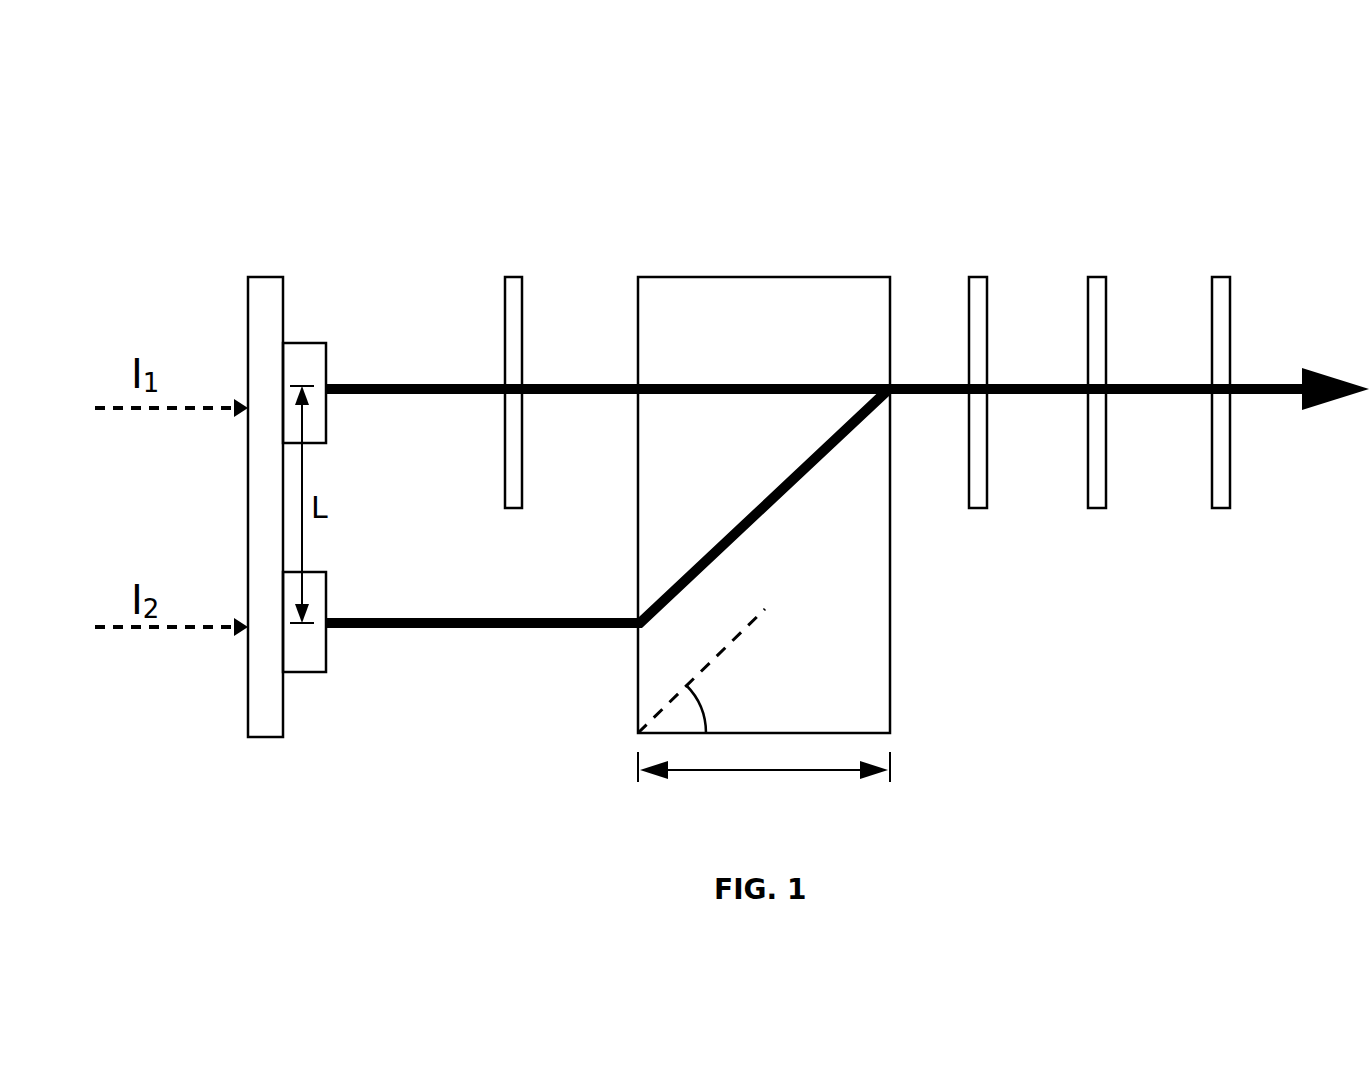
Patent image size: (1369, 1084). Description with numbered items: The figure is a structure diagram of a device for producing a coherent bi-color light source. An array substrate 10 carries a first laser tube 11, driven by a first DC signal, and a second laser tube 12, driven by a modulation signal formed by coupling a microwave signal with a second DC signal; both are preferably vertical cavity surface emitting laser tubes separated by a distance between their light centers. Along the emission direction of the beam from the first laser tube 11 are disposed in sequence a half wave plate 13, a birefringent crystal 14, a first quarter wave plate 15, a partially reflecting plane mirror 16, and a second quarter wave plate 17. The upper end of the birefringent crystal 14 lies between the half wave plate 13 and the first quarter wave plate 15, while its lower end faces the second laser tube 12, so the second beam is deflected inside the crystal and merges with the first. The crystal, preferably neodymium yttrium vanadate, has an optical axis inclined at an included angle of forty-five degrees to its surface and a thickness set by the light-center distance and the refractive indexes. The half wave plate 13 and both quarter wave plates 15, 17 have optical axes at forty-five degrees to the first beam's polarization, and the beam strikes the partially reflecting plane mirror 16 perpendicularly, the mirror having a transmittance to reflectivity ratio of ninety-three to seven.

The array substrate 10 is at (257, 290).
The first laser tube 11 is at (312, 357).
The second laser tube 12 is at (305, 655).
The half wave plate 13 is at (512, 283).
The birefringent crystal 14 is at (763, 290).
The first quarter wave plate 15 is at (982, 283).
The partially reflecting plane mirror 16 is at (1098, 283).
The second quarter wave plate 17 is at (1222, 283).